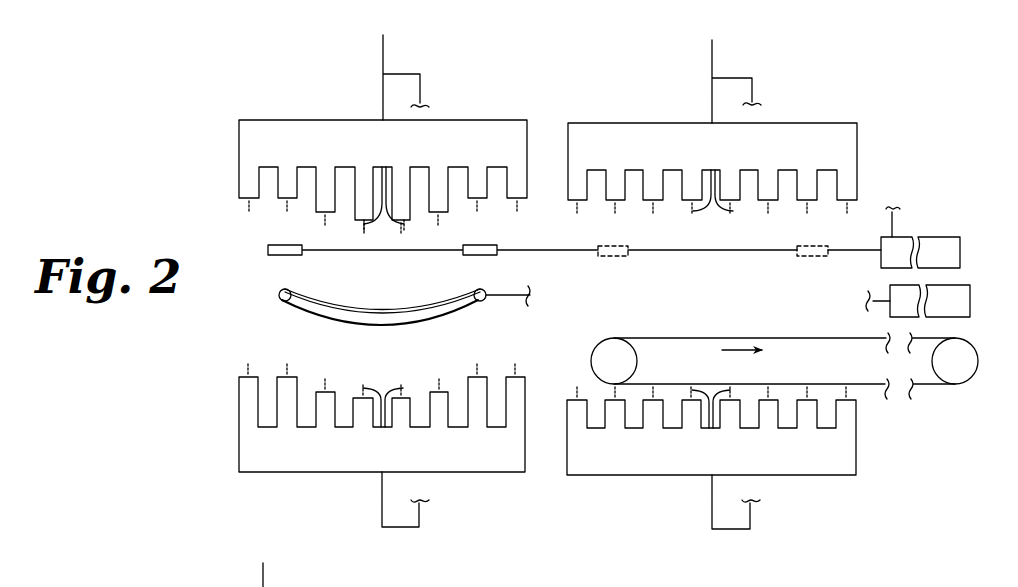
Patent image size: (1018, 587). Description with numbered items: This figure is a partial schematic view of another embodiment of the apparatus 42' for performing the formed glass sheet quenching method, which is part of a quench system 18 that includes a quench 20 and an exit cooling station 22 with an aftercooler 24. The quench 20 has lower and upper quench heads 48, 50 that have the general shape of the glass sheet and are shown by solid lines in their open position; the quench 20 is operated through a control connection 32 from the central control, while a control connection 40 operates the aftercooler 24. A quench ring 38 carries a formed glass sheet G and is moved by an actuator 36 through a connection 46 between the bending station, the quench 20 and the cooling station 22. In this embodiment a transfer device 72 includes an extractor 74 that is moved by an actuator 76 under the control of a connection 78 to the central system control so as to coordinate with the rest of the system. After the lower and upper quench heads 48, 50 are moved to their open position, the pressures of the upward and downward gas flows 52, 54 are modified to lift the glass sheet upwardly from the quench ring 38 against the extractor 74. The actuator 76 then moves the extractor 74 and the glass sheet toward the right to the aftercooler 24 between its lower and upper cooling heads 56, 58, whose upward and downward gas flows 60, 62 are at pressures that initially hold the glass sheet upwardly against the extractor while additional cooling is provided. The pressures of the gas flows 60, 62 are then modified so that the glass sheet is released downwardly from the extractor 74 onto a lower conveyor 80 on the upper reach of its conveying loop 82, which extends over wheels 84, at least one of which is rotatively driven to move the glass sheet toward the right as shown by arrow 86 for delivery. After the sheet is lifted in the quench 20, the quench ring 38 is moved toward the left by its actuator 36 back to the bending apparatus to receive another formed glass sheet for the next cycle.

The quench system 18 is at (484, 499).
The quench 20 is at (225, 433).
The exit cooling station 22 is at (786, 501).
The aftercooler 24 is at (863, 481).
The control connection 32 is at (383, 58).
The actuator 36 is at (917, 318).
The quench ring 38 is at (288, 301).
The control connection 40 is at (712, 60).
The apparatus 42' is at (636, 59).
The connection 46 is at (508, 298).
The lower quench head 48 is at (525, 457).
The upper quench head 50 is at (527, 148).
The upward gas flow 52 is at (383, 424).
The downward gas flow 54 is at (384, 185).
The lower cooling head 56 is at (856, 450).
The upper cooling head 58 is at (857, 143).
The upward cooling gas flow 60 is at (711, 427).
The downward cooling gas flow 62 is at (713, 175).
The transfer device 72 is at (858, 222).
The extractor 74 is at (292, 255).
The actuator 76 is at (908, 237).
The connection 78 is at (896, 222).
The lower conveyor 80 is at (869, 394).
The conveying loop 82 is at (826, 338).
The wheels 84 is at (594, 348).
The arrow 86 is at (735, 346).
The glass sheet G is at (481, 289).